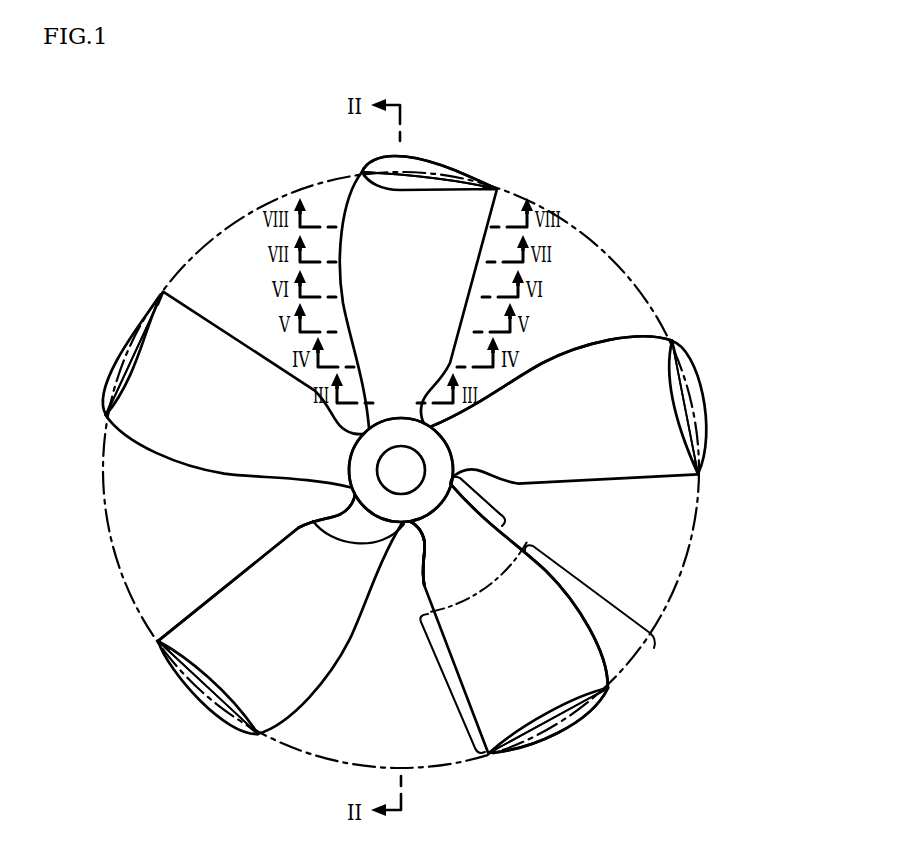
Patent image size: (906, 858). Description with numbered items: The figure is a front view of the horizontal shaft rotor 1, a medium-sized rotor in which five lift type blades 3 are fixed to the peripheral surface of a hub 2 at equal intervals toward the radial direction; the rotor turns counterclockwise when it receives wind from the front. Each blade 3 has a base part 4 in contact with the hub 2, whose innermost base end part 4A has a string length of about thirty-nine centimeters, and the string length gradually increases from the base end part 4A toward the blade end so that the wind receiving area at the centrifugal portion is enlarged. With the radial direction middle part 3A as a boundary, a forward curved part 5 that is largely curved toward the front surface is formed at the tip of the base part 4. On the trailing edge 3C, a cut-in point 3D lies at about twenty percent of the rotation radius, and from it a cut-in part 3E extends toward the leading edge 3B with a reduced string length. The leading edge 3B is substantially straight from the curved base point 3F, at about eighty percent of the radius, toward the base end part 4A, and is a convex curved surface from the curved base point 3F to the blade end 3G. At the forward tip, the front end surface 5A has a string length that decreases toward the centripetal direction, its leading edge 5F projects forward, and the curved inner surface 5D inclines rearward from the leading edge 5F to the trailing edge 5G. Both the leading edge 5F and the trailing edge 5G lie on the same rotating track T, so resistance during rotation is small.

The horizontal shaft rotor 1 is at (694, 201).
The hub 2 is at (352, 495).
The lift type blade 3 is at (438, 442).
The radial direction middle part 3A is at (478, 607).
The leading edge 3B is at (548, 408).
The trailing edge 3C is at (404, 606).
The cut-in point 3D is at (403, 588).
The cut-in part 3E is at (407, 569).
The curved base point 3F is at (556, 580).
The blade end 3G is at (494, 442).
The base part 4 is at (486, 501).
The base end part 4A is at (322, 511).
The forward curved part 5 is at (536, 649).
The front end surface of the forward tip 5A is at (410, 464).
The curved inner surface 5D is at (228, 584).
The leading edge of the front end surface 5F is at (412, 470).
The trailing edge of the front end surface 5G is at (408, 480).
The rotating track T is at (680, 573).